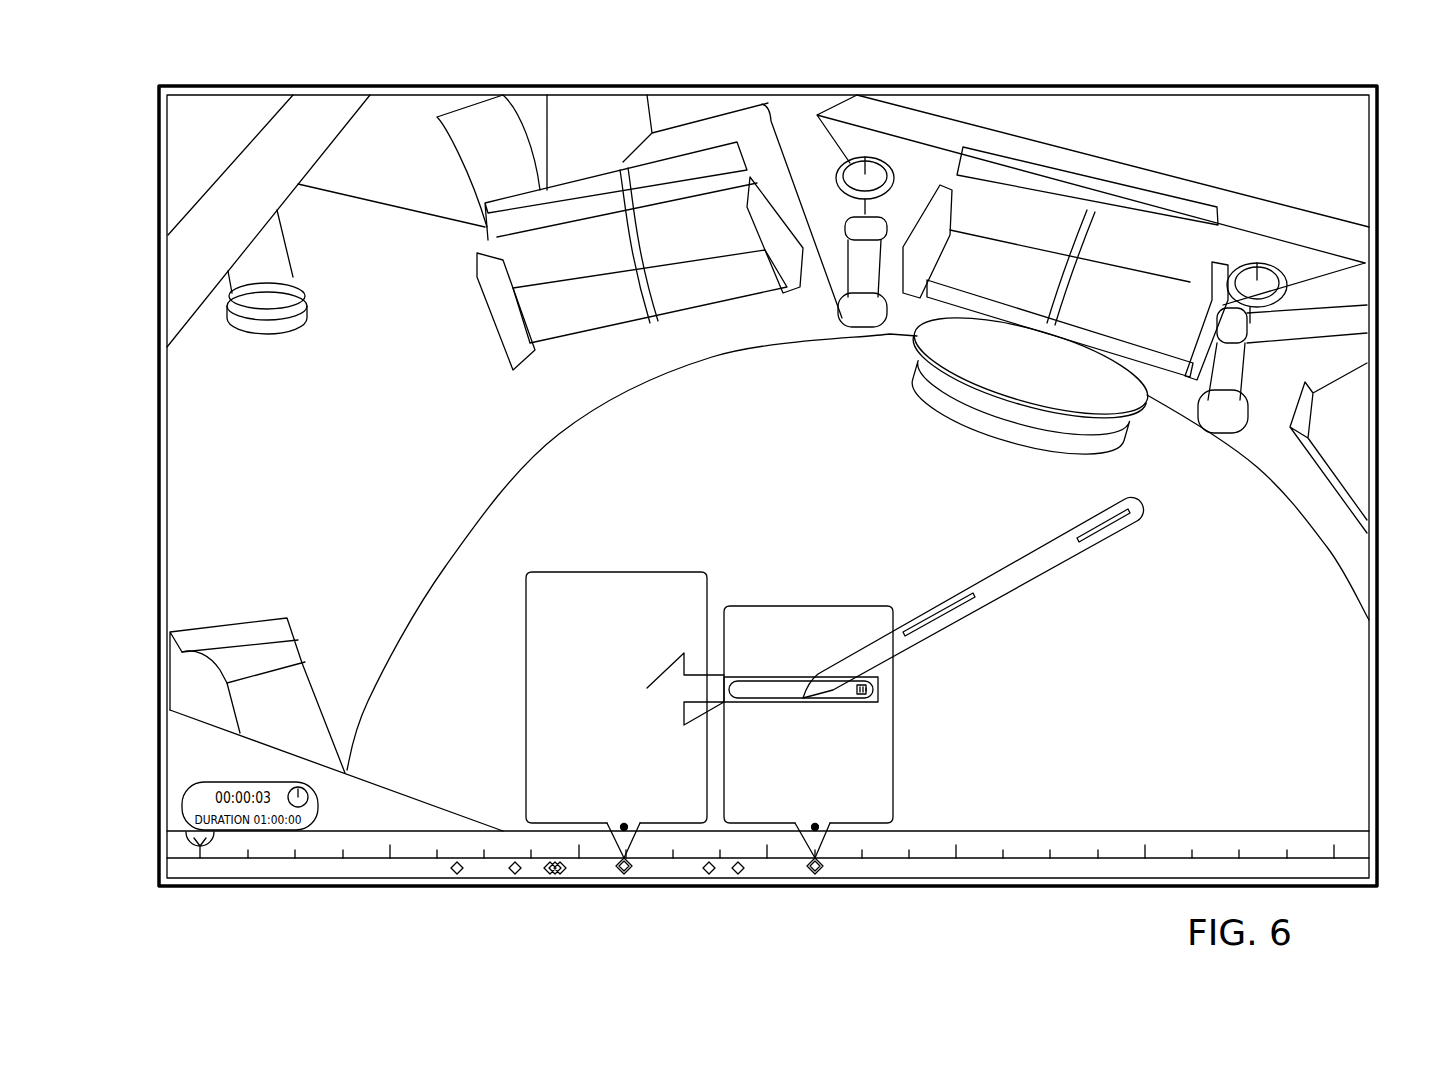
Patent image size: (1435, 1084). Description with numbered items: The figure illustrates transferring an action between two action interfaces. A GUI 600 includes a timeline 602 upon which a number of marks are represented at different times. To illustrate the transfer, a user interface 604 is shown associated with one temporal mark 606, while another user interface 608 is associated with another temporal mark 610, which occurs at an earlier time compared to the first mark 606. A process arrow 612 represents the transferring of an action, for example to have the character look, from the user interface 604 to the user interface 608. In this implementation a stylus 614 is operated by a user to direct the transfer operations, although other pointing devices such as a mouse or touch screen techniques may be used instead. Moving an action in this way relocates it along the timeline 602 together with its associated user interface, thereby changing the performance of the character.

The GUI 600 is at (1378, 217).
The timeline 602 is at (156, 832).
The user interface 604 is at (840, 605).
The temporal mark 606 is at (812, 870).
The user interface 608 is at (663, 570).
The temporal mark 610 is at (620, 870).
The process arrow 612 is at (672, 668).
The stylus 614 is at (1040, 540).